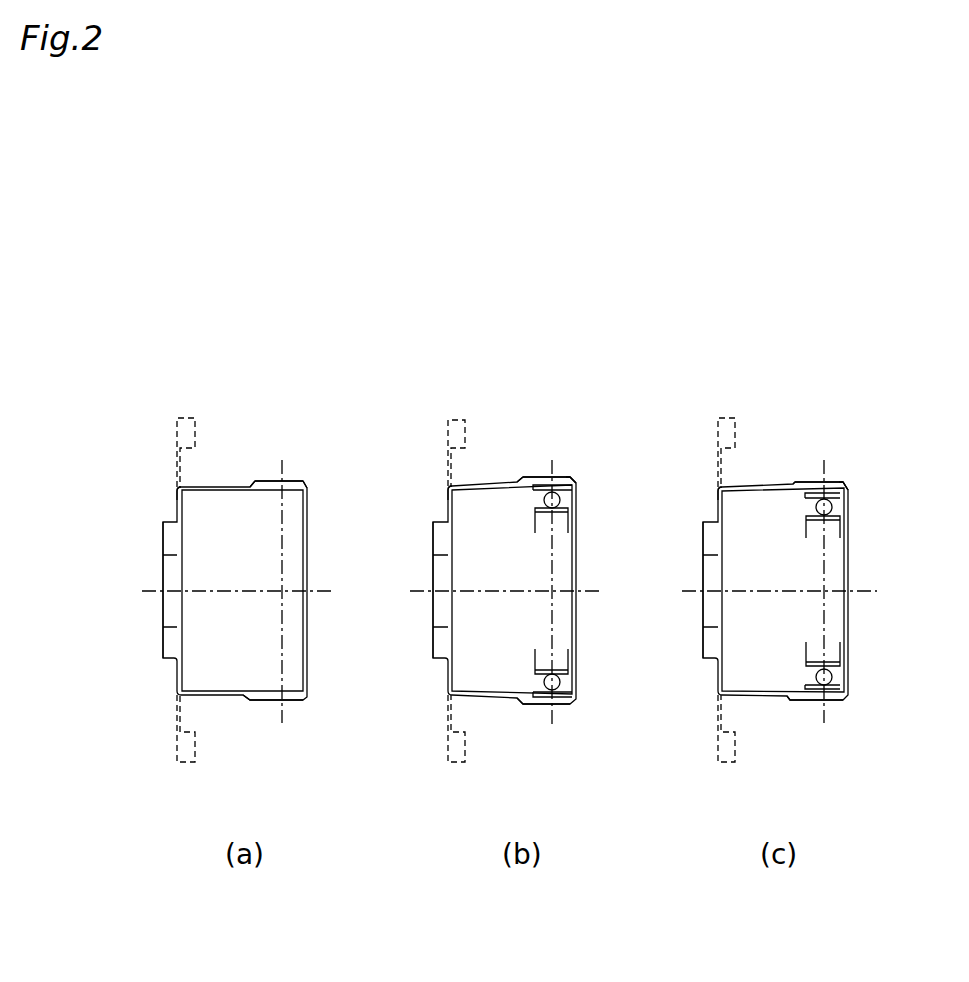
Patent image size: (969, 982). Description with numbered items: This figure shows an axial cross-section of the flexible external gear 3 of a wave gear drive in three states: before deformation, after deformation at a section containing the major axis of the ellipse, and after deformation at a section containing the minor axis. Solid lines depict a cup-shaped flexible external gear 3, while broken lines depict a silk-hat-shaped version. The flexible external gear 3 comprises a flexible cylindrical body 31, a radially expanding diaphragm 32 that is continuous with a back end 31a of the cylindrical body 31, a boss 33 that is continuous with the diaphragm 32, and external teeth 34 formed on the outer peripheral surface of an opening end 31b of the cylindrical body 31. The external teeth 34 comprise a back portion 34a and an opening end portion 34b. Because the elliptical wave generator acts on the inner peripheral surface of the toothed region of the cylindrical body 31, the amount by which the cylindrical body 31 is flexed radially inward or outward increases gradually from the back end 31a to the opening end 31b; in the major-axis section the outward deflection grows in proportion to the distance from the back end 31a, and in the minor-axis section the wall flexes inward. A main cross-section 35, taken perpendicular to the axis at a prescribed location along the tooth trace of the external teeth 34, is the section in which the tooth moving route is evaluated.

The flexible external gear 3 is at (266, 425).
The flexible cylindrical body 31 is at (227, 697).
The back end 31a is at (177, 485).
The opening end 31b is at (307, 486).
The diaphragm 32 is at (177, 508).
The boss 33 is at (168, 540).
The external teeth 34 is at (288, 482).
The back portion 34a is at (253, 484).
The opening end portion 34b is at (572, 478).
The main cross-section 35 is at (280, 709).